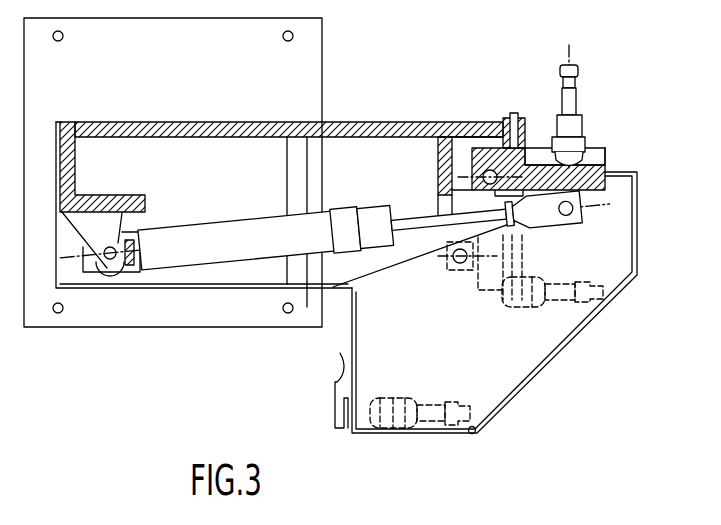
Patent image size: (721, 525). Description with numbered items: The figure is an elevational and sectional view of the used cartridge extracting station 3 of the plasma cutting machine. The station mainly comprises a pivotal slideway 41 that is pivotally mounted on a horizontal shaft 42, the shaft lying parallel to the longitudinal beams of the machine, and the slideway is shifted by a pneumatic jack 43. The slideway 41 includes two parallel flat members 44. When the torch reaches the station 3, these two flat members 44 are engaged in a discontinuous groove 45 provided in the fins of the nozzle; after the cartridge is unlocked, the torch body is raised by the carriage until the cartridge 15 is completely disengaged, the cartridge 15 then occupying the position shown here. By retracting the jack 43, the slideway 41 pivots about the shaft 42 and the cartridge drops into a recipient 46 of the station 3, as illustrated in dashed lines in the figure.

The used cartridge extracting station 3 is at (222, 353).
The cartridge 15 is at (578, 72).
The pivotal slideway 41 is at (603, 170).
The horizontal shaft 42 is at (480, 147).
The pneumatic jack 43 is at (225, 232).
The parallel flat members 44 is at (540, 143).
The discontinuous groove 45 is at (587, 150).
The recipient 46 is at (493, 357).